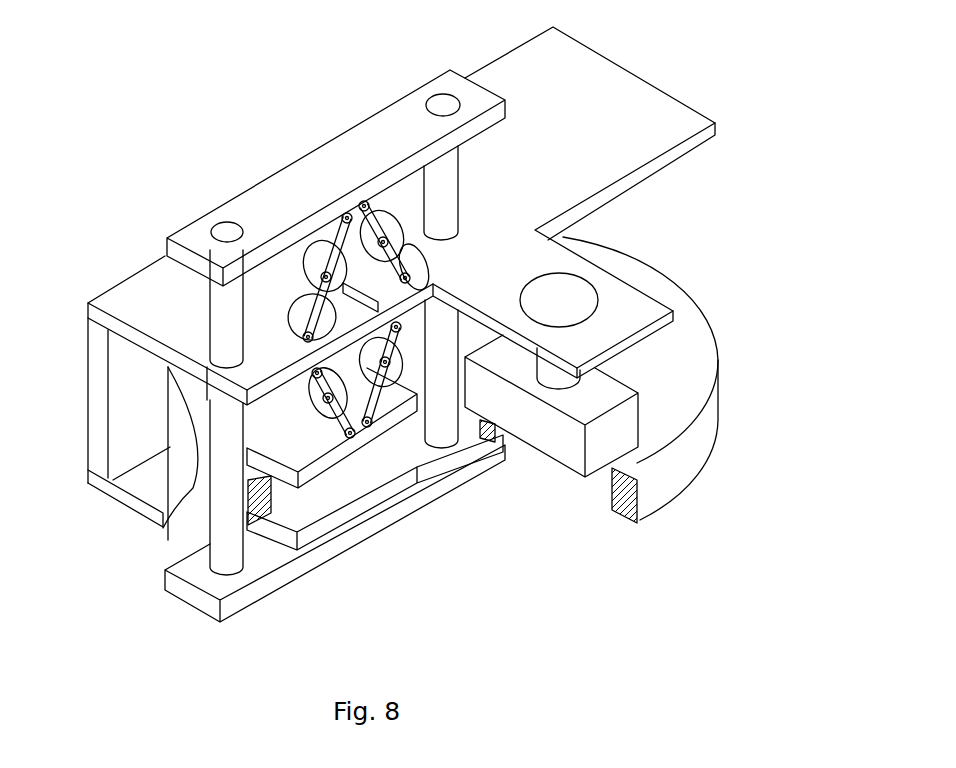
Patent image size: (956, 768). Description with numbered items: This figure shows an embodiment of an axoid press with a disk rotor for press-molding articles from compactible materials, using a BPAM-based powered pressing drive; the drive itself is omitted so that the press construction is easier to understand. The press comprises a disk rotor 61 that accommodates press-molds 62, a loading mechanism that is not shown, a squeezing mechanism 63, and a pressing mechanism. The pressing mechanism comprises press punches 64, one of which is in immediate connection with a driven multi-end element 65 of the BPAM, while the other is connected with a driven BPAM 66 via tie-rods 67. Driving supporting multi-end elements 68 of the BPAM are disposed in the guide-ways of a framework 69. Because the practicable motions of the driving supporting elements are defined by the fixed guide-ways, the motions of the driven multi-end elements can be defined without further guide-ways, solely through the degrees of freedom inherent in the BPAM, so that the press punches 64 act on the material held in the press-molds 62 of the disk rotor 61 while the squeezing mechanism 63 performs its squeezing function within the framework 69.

The disk rotor 61 is at (643, 493).
The press-molds 62 is at (607, 478).
The squeezing mechanism 63 is at (553, 405).
The press punches 64 is at (367, 428).
The driven multi-end element 65 is at (372, 418).
The driven BPAM 66 is at (350, 221).
The tie-rods 67 is at (228, 320).
The driving supporting multi-end elements 68 is at (270, 352).
The framework 69 is at (158, 325).